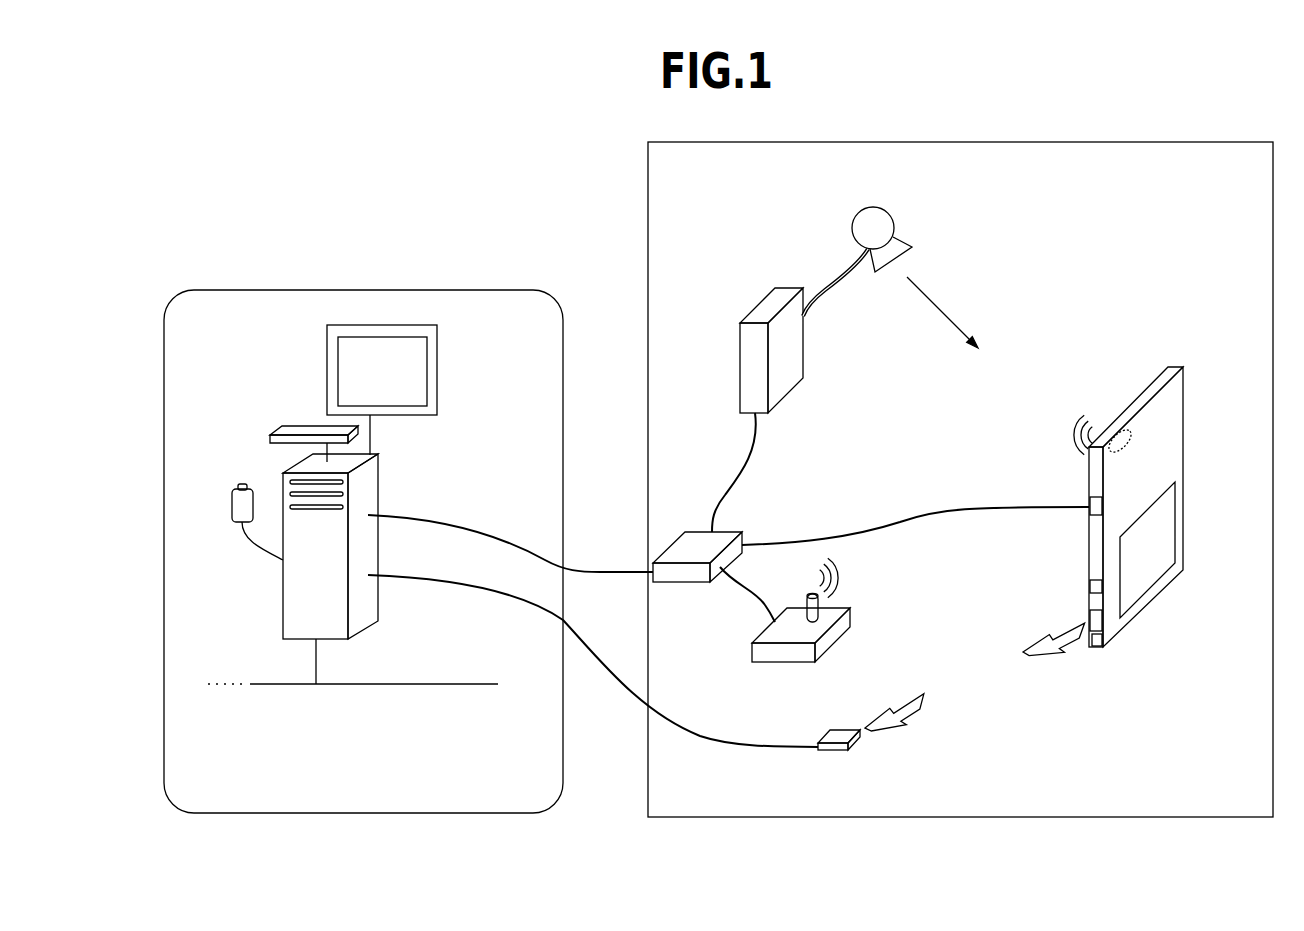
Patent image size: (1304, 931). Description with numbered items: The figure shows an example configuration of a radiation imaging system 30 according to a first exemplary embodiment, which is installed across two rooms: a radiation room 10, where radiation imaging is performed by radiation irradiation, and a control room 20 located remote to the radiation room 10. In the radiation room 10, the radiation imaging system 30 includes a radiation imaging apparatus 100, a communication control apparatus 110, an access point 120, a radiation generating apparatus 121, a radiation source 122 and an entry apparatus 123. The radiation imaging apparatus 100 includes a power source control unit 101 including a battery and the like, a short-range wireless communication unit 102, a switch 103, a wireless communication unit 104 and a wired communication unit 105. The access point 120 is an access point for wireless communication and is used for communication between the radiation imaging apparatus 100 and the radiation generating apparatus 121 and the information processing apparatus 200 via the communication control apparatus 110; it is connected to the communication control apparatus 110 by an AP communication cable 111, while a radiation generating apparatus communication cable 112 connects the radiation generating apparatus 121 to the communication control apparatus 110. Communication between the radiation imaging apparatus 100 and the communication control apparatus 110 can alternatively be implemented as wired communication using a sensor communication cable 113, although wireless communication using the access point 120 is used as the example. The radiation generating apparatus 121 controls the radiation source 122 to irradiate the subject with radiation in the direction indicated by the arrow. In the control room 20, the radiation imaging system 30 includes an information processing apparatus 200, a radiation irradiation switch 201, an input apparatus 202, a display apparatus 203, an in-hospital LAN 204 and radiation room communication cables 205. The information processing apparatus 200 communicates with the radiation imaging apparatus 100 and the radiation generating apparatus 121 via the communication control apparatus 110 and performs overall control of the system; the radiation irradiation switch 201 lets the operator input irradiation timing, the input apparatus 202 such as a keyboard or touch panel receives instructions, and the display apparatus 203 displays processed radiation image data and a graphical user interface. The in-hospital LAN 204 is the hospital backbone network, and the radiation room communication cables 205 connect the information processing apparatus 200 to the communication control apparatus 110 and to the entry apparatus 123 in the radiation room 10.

The radiation room 10 is at (1008, 142).
The control room 20 is at (482, 290).
The radiation imaging system 30 is at (338, 196).
The radiation imaging apparatus 100 is at (1185, 437).
The power source control unit 101 is at (1170, 528).
The short-range wireless communication unit 102 is at (1097, 641).
The switch 103 is at (1090, 587).
The wireless communication unit 104 is at (1125, 428).
The wired communication unit 105 is at (1095, 515).
The communication control apparatus 110 is at (698, 532).
The AP communication cable 111 is at (752, 601).
The radiation generating apparatus communication cable 112 is at (735, 470).
The sensor communication cable 113 is at (822, 543).
The access point 120 is at (850, 618).
The radiation generating apparatus 121 is at (755, 306).
The radiation source 122 is at (853, 213).
The entry apparatus 123 is at (855, 745).
The information processing apparatus 200 is at (378, 476).
The radiation irradiation switch 201 is at (242, 485).
The input apparatus 202 is at (298, 426).
The display apparatus 203 is at (437, 366).
The in-hospital LAN 204 is at (436, 684).
The radiation room communication cables 205 is at (601, 572).